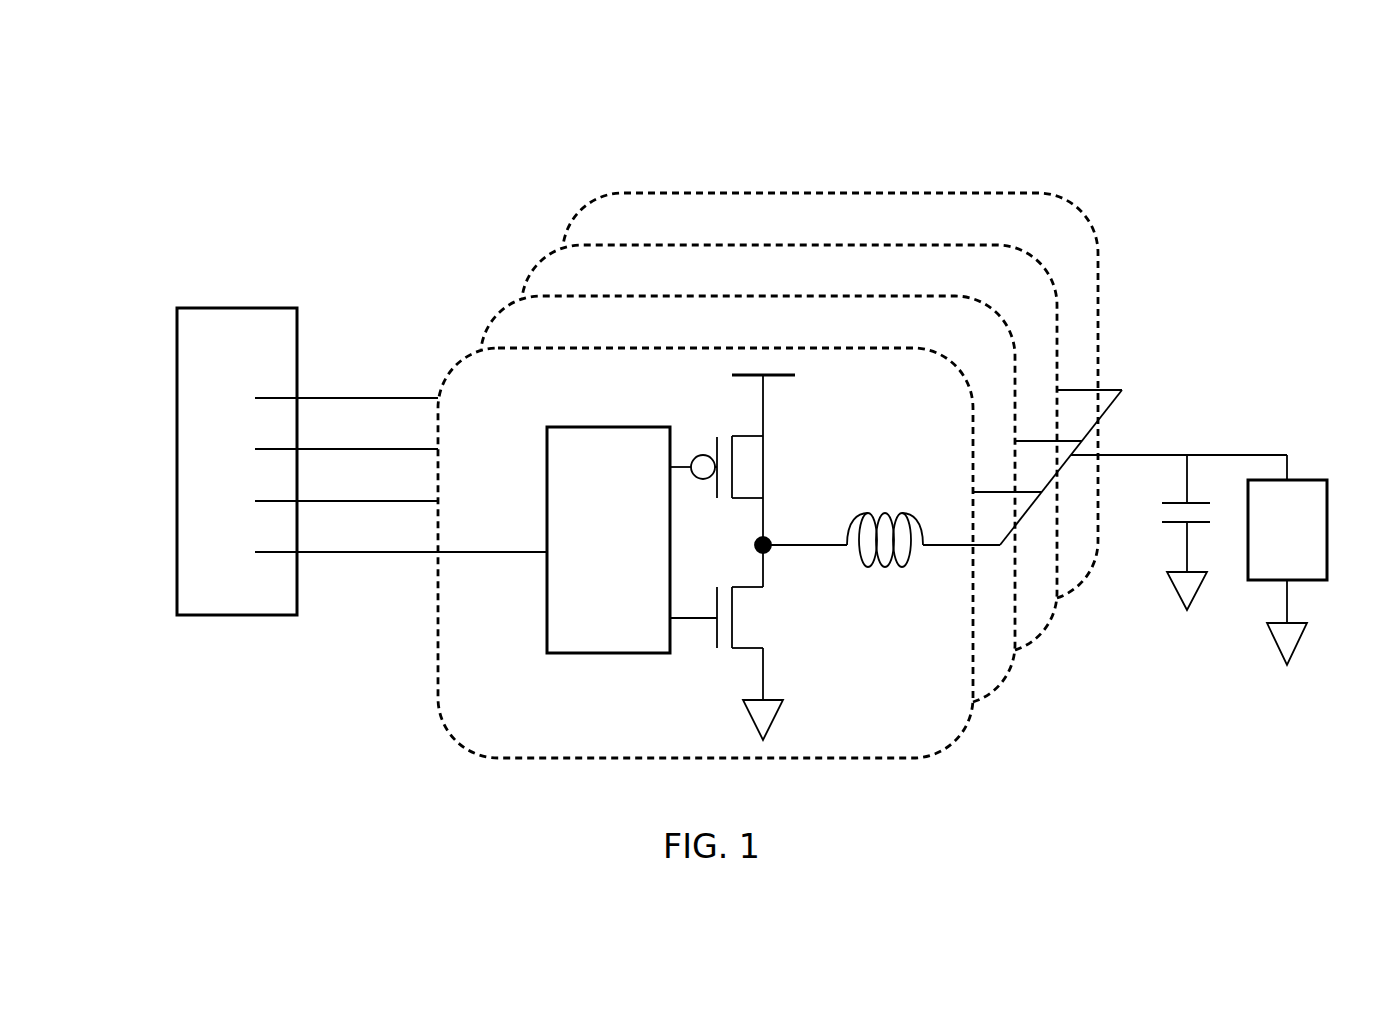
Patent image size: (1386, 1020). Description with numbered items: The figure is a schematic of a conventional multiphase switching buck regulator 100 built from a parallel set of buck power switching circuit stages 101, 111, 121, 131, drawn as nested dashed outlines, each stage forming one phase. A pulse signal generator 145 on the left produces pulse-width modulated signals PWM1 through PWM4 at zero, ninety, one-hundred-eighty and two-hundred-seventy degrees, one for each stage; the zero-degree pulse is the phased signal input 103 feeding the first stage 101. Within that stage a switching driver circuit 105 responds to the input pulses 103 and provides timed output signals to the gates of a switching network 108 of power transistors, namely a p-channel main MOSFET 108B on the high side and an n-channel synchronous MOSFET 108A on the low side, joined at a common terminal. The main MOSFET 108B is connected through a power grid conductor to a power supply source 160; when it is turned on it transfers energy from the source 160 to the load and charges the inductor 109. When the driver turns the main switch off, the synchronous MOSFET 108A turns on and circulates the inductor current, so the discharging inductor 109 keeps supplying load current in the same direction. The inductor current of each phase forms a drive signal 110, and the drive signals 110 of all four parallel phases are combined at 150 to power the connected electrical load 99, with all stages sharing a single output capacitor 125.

The multiphase switching buck regulator 100 is at (1258, 113).
The pulse signal generator 145 is at (233, 308).
The phased signal input 103 is at (392, 553).
The power switching circuit stage 101 is at (472, 361).
The power switching circuit stage 111 is at (512, 311).
The power switching circuit stage 121 is at (554, 260).
The power switching circuit stage 131 is at (596, 210).
The switching driver circuit 105 is at (575, 653).
The switching network 108 is at (740, 556).
The n-channel MOSFET 108A is at (737, 661).
The p-channel MOSFET 108B is at (726, 424).
The power supply source 160 is at (808, 376).
The inductor 109 is at (879, 502).
The drive signal 110 is at (946, 548).
The combining node 150 is at (1163, 455).
The output capacitor 125 is at (1160, 525).
The electrical load 99 is at (1248, 566).